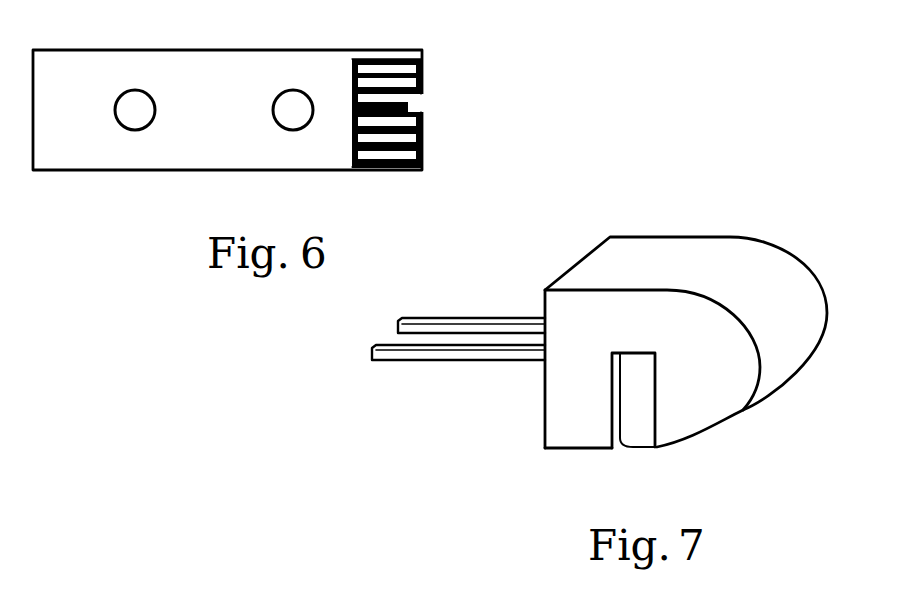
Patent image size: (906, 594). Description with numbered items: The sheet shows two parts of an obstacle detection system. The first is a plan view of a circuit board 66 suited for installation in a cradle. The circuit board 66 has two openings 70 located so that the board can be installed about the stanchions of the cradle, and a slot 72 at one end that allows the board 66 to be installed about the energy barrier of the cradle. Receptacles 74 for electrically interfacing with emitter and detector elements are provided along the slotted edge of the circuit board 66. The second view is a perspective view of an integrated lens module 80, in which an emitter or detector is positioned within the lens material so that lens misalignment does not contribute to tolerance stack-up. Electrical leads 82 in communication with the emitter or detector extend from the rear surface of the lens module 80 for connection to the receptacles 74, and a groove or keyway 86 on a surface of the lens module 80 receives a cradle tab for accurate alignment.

In FIG. 6, the circuit board 66 is at (243, 63).
In FIG. 6, the openings 70 is at (134, 131).
In FIG. 6, the slot 72 is at (409, 108).
In FIG. 6, the receptacles 74 is at (397, 52).
In FIG. 7, the lens module 80 is at (783, 230).
In FIG. 7, the electrical leads 82 is at (439, 305).
In FIG. 7, the keyway 86 is at (633, 428).